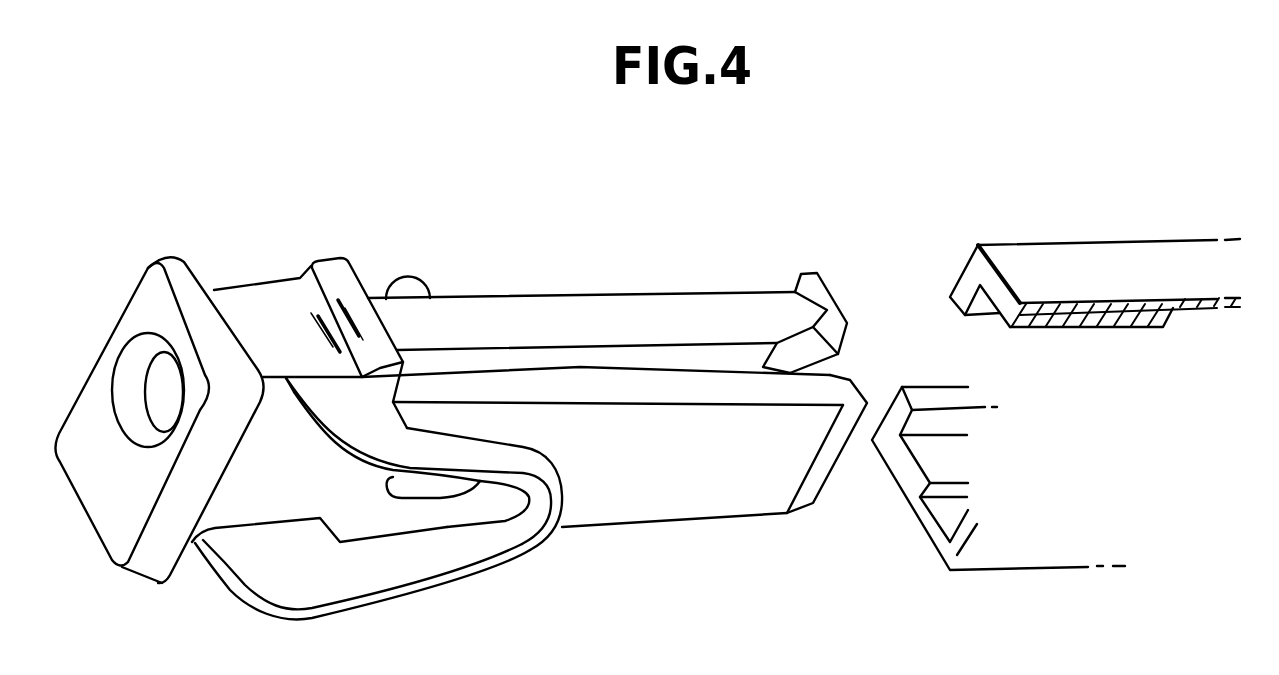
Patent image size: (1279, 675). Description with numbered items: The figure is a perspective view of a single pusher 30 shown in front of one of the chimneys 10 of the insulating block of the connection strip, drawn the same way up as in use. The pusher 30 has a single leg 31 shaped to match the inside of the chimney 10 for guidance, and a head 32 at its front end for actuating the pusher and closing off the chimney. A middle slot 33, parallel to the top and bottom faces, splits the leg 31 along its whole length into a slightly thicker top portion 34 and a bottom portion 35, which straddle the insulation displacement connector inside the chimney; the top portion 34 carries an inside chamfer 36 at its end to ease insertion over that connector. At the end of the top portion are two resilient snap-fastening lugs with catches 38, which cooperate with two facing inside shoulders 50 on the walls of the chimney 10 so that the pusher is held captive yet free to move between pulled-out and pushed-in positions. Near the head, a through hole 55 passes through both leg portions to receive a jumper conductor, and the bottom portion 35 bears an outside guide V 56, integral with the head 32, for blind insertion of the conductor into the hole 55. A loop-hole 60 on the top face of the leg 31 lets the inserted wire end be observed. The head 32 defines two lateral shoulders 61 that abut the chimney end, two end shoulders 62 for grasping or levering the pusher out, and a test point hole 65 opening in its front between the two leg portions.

The chimney 10 is at (1088, 246).
The single pusher 30 is at (175, 238).
The leg 31 is at (525, 297).
The head 32 is at (270, 283).
The slot 33 is at (667, 357).
The top portion 34 is at (573, 308).
The bottom portion 35 is at (660, 470).
The inside chamfer 36 is at (836, 336).
The snap-fastening catch 38 is at (801, 278).
The inside shoulder 50 is at (937, 457).
The through hole 55 is at (446, 490).
The outside guide V 56 is at (366, 572).
The loop-hole 60 is at (407, 283).
The lateral shoulder 61 is at (335, 274).
The end shoulder 62 is at (163, 544).
The test point hole 65 is at (152, 371).